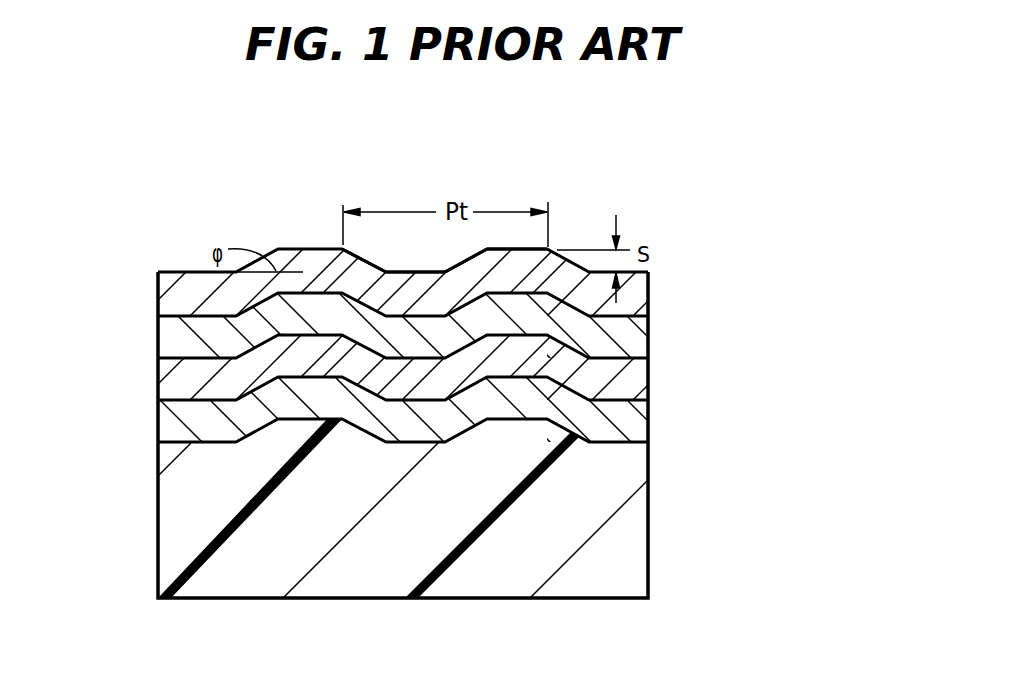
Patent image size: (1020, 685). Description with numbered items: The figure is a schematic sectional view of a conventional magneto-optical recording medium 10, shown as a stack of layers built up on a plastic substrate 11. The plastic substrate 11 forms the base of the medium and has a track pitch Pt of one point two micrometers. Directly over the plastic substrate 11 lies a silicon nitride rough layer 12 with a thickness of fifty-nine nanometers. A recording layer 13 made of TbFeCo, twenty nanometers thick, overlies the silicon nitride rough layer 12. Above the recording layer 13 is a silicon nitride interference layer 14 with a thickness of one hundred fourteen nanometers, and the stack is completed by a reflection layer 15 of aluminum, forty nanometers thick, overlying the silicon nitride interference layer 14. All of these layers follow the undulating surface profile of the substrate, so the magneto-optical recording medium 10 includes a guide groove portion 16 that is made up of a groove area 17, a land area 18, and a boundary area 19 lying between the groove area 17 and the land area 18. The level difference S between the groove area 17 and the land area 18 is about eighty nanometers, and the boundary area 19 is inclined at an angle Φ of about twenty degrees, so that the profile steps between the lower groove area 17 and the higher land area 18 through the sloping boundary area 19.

The magneto-optical recording medium 10 is at (173, 251).
The plastic substrate 11 is at (625, 562).
The silicon nitride rough layer 12 is at (630, 433).
The recording layer 13 is at (630, 390).
The silicon nitride interference layer 14 is at (633, 337).
The reflection layer 15 is at (634, 290).
The guide groove portion 16 is at (379, 259).
The groove area 17 is at (420, 271).
The land area 18 is at (527, 248).
The boundary area 19 is at (468, 258).